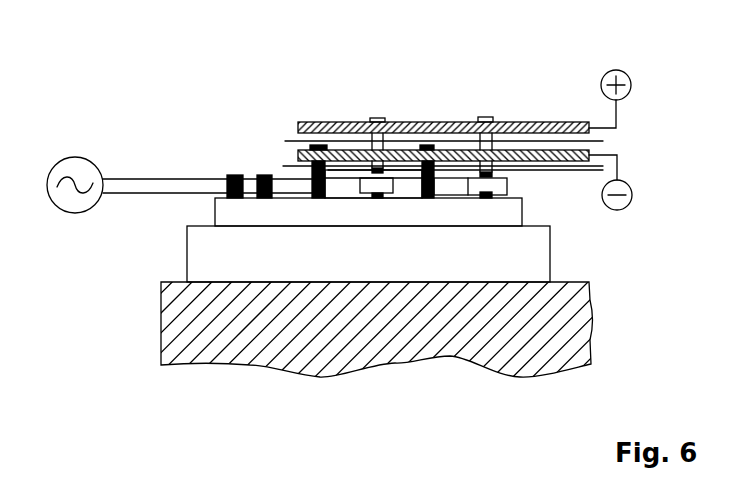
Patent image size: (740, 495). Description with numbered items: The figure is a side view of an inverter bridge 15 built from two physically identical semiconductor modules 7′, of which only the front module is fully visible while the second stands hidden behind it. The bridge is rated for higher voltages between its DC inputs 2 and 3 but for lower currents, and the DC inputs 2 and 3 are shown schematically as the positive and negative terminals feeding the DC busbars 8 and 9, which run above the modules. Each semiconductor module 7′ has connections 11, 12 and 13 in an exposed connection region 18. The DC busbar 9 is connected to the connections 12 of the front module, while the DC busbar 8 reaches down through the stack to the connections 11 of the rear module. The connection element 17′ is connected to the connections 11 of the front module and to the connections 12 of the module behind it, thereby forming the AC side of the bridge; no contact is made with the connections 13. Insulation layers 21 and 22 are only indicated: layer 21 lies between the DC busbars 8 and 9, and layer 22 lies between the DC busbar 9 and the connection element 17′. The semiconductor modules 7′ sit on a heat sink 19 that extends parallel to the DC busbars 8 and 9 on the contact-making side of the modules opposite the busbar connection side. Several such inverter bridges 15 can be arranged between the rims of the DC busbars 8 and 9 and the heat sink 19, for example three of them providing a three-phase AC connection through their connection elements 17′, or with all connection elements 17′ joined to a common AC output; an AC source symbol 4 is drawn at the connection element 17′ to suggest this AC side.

The DC input 2 is at (634, 73).
The DC input 3 is at (637, 194).
The AC signal source 4 is at (62, 160).
The semiconductor module 7′ is at (178, 248).
The DC busbar 8 is at (540, 122).
The DC busbar 9 is at (558, 163).
The connection 11 is at (377, 118).
The connection 12 is at (316, 198).
The connection 13 is at (264, 175).
The inverter bridge 15 is at (137, 101).
The connection element 17′ is at (188, 173).
The connection region 18 is at (531, 210).
The heat sink 19 is at (180, 313).
The insulation layer 21 is at (347, 141).
The insulation layer 22 is at (287, 166).